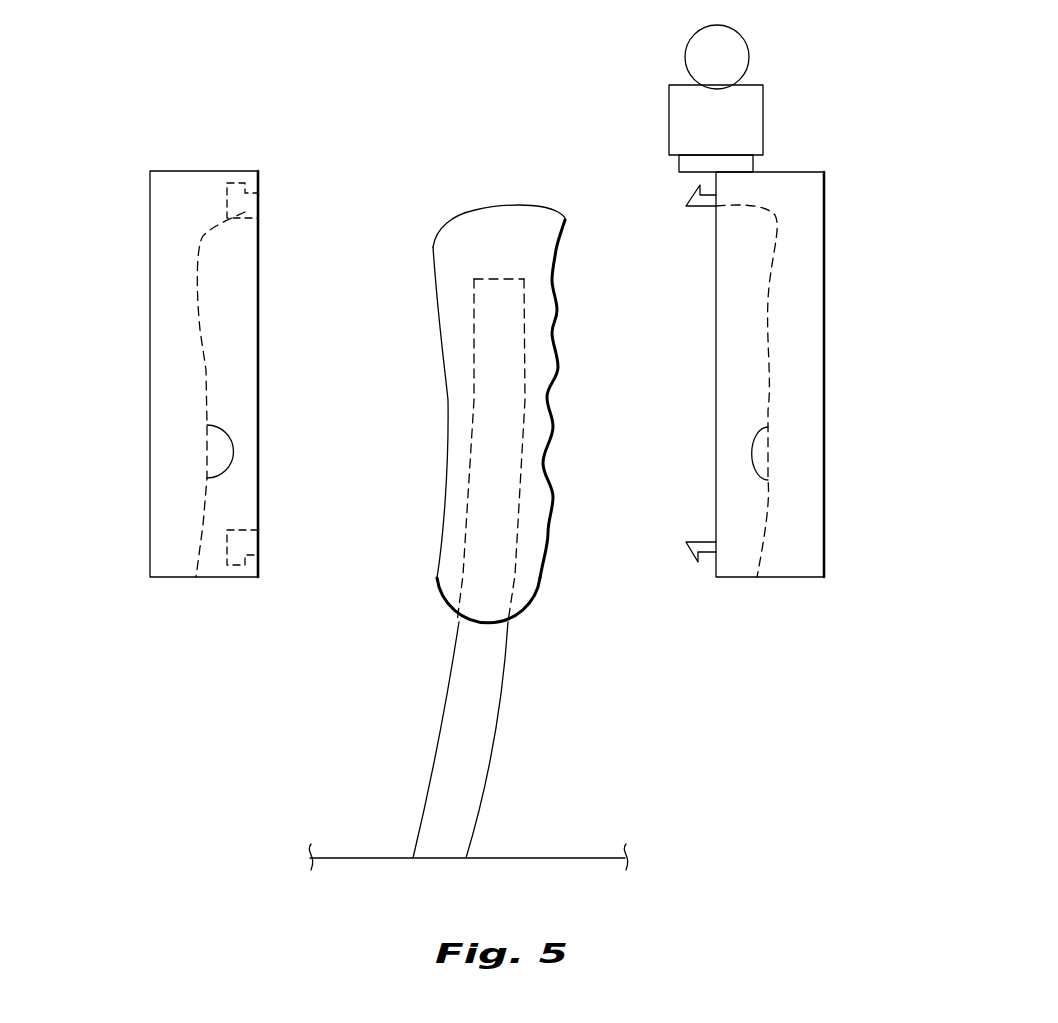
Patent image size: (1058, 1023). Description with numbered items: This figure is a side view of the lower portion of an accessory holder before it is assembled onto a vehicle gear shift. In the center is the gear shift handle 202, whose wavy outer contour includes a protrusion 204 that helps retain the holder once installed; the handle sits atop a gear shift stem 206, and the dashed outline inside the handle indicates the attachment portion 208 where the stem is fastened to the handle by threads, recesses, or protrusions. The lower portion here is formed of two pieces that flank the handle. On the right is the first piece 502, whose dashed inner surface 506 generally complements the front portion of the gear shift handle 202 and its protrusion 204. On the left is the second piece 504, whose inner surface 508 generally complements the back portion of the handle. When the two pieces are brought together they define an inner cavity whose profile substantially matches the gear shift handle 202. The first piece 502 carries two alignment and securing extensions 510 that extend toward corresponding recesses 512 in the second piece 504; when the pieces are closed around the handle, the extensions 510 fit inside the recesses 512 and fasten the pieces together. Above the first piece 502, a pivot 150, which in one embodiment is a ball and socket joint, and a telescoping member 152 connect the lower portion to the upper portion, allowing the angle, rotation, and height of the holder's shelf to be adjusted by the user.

The pivot 150 is at (745, 45).
The telescoping member 152 is at (763, 130).
The gear shift handle 202 is at (545, 577).
The protrusion 204 is at (565, 220).
The gear shift stem 206 is at (463, 572).
The attachment portion 208 is at (474, 298).
The first piece 502 is at (824, 343).
The second piece 504 is at (150, 366).
The surface 506 is at (756, 455).
The surface 508 is at (207, 477).
The extensions 510 is at (693, 206).
The recesses 512 is at (243, 200).